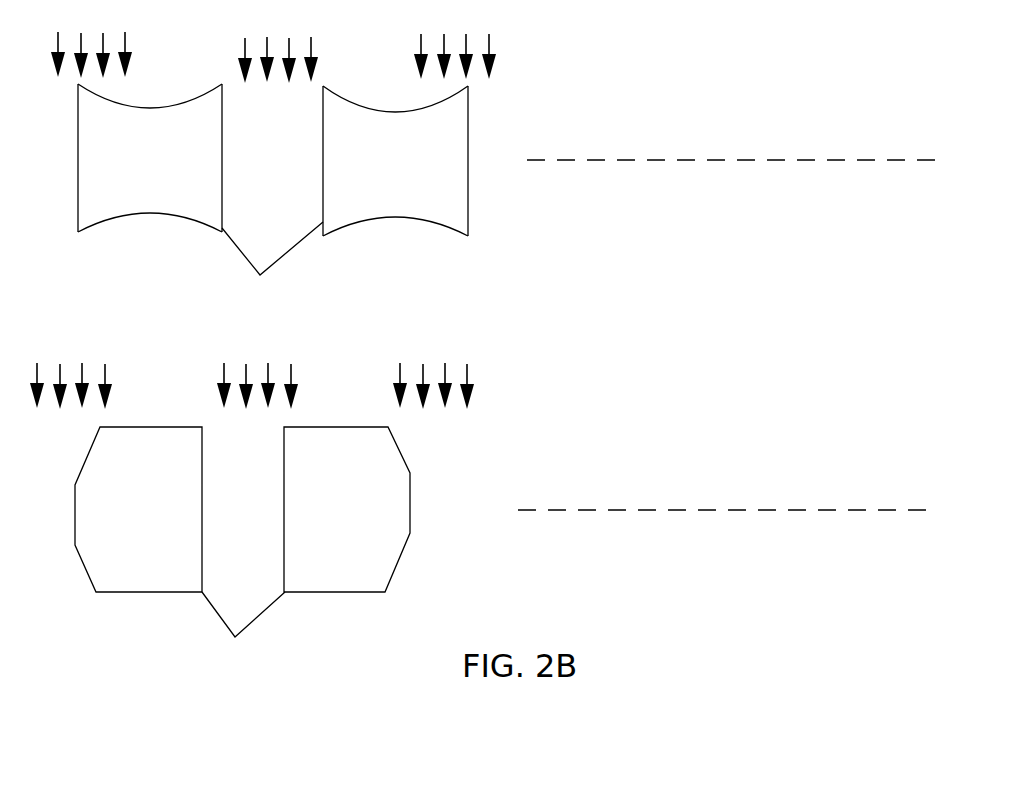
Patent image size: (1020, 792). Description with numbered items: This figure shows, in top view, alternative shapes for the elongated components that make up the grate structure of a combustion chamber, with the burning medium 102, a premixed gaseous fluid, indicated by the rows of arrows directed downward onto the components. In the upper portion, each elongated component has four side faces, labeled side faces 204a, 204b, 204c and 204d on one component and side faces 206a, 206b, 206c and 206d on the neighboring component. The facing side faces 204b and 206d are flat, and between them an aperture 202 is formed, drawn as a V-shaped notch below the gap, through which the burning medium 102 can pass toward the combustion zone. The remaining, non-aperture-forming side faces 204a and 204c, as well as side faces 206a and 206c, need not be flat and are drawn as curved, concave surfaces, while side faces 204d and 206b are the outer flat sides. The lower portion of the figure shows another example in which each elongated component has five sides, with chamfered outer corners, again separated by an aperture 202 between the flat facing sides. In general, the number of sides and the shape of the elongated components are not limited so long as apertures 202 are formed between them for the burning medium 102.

The burning medium 102 is at (263, 208).
The aperture 202 is at (278, 300).
The side face 204a is at (135, 103).
The side face 204b is at (224, 168).
The side face 204c is at (146, 215).
The side face 204d is at (80, 144).
The side face 206a is at (379, 105).
The side face 206b is at (470, 172).
The side face 206c is at (392, 219).
The side face 206d is at (325, 146).